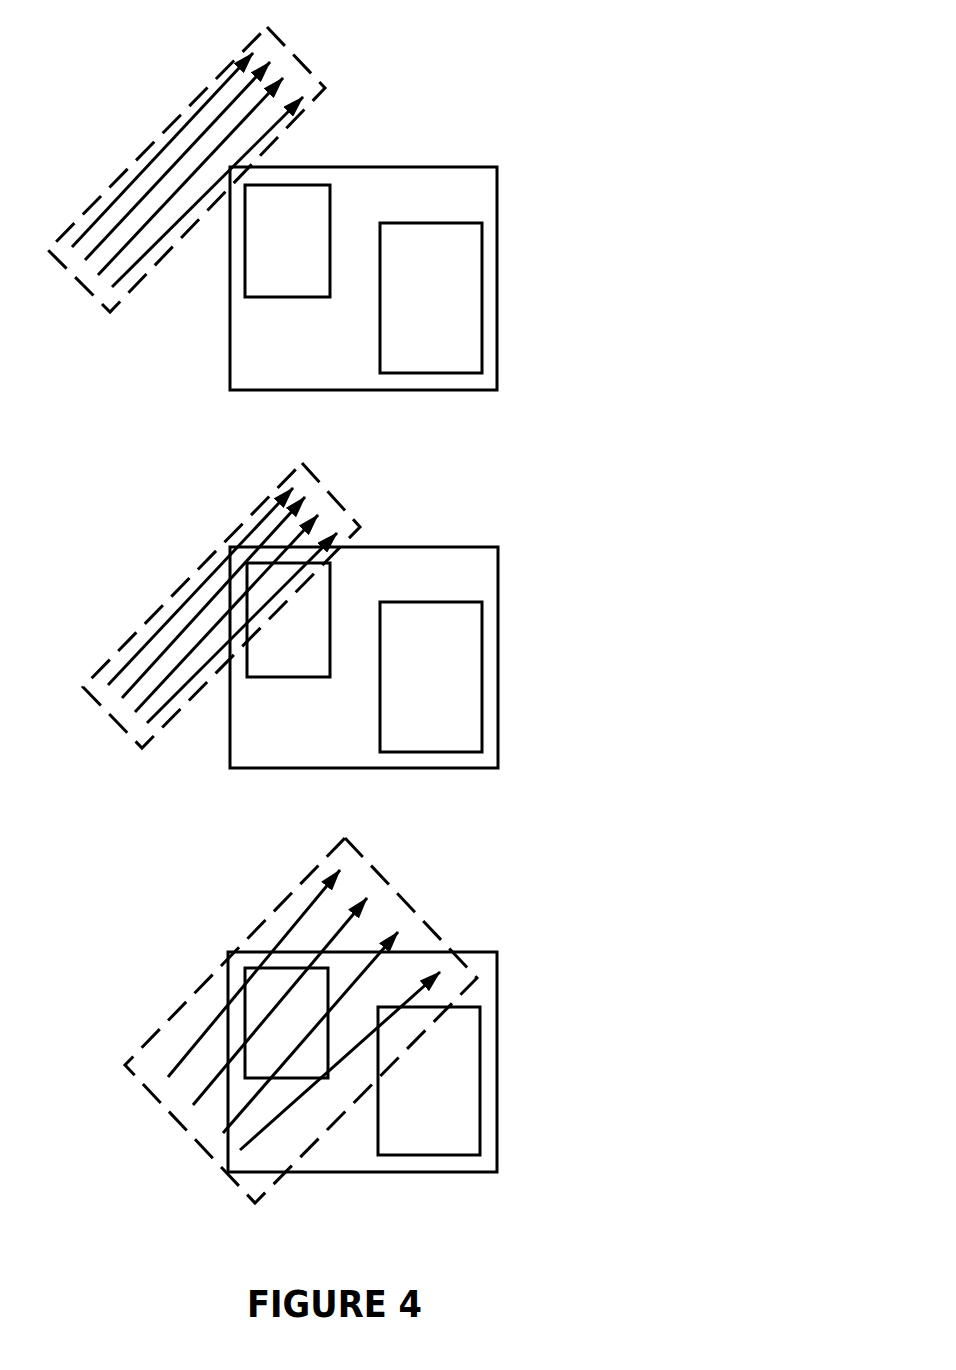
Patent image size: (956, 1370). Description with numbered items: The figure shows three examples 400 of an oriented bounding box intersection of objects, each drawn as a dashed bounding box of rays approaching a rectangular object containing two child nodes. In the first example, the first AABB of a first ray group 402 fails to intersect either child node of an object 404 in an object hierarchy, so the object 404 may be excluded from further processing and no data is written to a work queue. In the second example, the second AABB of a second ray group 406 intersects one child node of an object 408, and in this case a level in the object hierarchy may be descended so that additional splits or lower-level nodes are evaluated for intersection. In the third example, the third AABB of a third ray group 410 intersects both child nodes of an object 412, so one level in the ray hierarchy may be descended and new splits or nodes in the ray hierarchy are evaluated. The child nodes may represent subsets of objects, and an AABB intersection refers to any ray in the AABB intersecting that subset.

The examples 400 is at (657, 183).
The first ray group 402 is at (285, 45).
The object 404 is at (497, 290).
The second ray group 406 is at (323, 488).
The object 408 is at (498, 663).
The third ray group 410 is at (380, 873).
The object 412 is at (497, 1073).